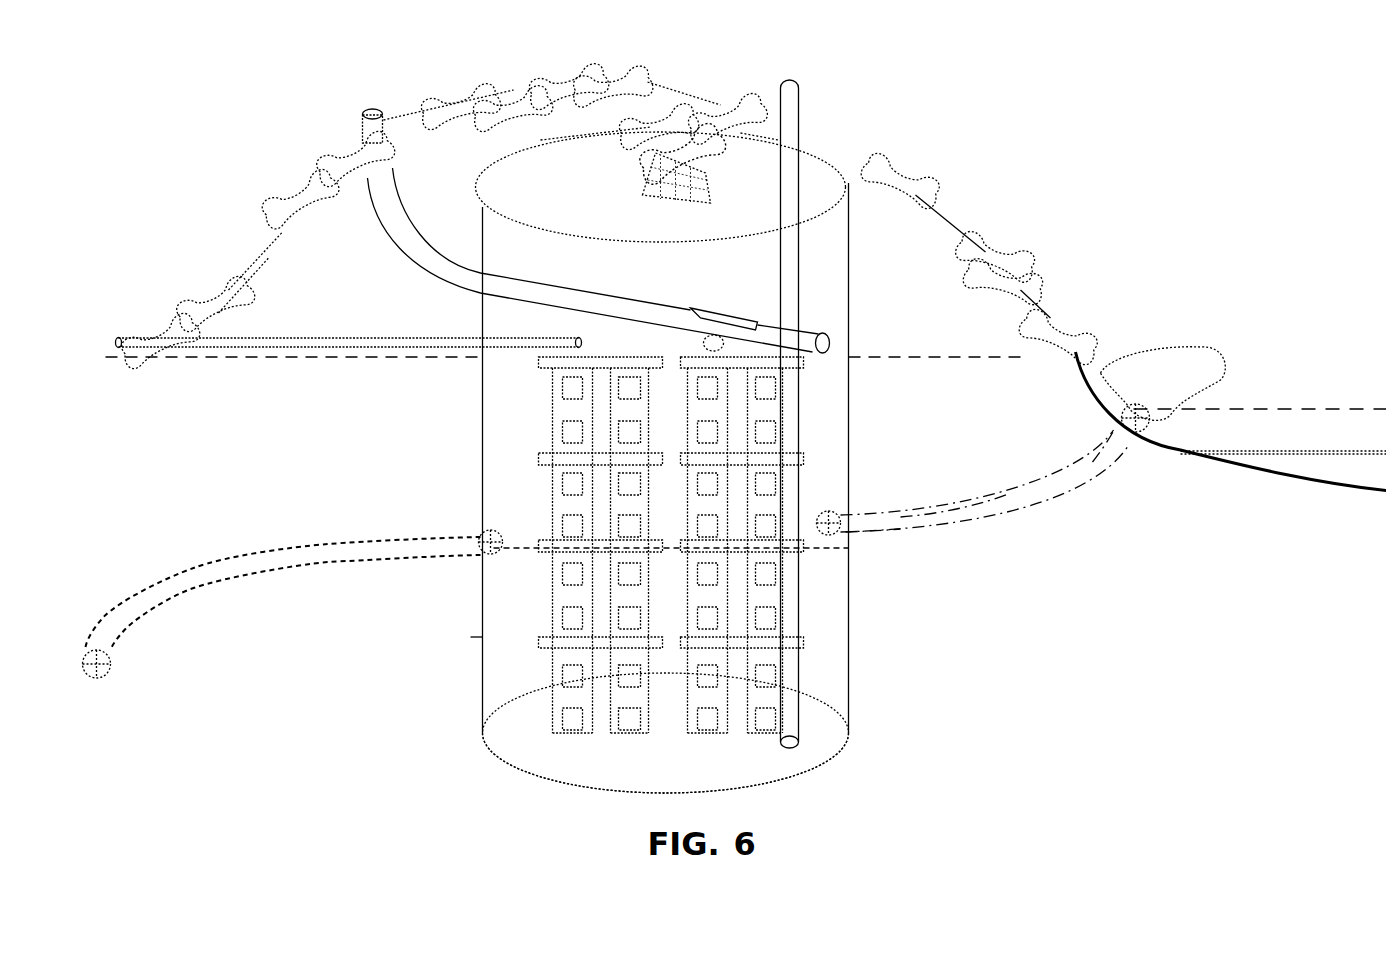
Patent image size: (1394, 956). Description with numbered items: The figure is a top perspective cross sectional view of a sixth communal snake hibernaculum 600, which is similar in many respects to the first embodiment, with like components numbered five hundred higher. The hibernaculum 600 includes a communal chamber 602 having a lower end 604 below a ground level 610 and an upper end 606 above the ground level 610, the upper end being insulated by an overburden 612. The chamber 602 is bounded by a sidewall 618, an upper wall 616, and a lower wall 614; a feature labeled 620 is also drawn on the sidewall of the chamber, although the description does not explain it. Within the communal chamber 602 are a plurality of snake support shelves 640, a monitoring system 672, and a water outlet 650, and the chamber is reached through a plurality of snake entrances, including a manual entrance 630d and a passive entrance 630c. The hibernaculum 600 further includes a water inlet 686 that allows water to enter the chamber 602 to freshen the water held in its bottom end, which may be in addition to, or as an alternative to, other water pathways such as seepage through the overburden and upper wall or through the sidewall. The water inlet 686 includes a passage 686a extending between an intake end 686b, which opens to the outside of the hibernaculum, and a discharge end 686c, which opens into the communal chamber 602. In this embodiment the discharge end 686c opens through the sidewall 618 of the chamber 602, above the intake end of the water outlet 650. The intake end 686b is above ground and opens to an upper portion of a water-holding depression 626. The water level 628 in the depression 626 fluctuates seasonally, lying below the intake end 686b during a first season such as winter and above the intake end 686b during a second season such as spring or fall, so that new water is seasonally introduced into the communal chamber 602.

The communal snake hibernaculum 600 is at (265, 118).
The communal chamber 602 is at (505, 487).
The lower end 604 is at (470, 713).
The upper end 606 is at (813, 138).
The ground level 610 is at (985, 357).
The overburden 612 is at (947, 237).
The lower wall 614 is at (820, 725).
The upper wall 616 is at (546, 168).
The sidewall 618 is at (480, 638).
The upper port 620 is at (480, 508).
The water-holding depression 626 is at (1287, 362).
The water level 628 is at (1263, 452).
The passive entrance 630c is at (243, 345).
The manual entrance 630d is at (408, 232).
The snake support shelves 640 is at (638, 360).
The water outlet 650 is at (176, 590).
The monitoring system 672 is at (772, 80).
The water inlet 686 is at (1025, 505).
The passage 686a is at (975, 510).
The intake end 686b is at (1088, 440).
The discharge end 686c is at (882, 541).